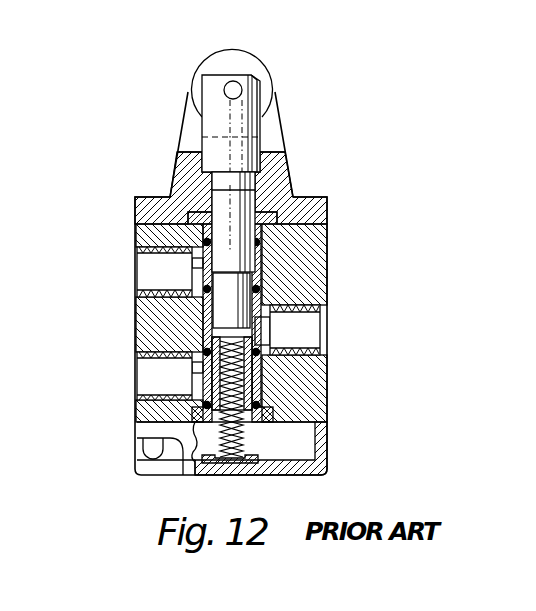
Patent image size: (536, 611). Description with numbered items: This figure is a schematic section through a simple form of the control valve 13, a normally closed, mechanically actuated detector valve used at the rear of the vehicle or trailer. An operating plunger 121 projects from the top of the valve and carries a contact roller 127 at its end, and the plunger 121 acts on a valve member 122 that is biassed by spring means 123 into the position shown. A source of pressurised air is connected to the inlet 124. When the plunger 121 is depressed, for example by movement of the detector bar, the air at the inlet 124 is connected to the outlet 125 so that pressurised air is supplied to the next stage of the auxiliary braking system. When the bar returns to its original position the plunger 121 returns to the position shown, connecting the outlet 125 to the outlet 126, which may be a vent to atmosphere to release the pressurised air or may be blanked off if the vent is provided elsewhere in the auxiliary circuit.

The control valve 13 is at (333, 254).
The operating plunger 121 is at (245, 107).
The valve member 122 is at (237, 208).
The spring means 123 is at (225, 385).
The inlet 124 is at (140, 378).
The outlet 125 is at (318, 330).
The outlet 126 is at (150, 268).
The contact roller 127 is at (257, 70).